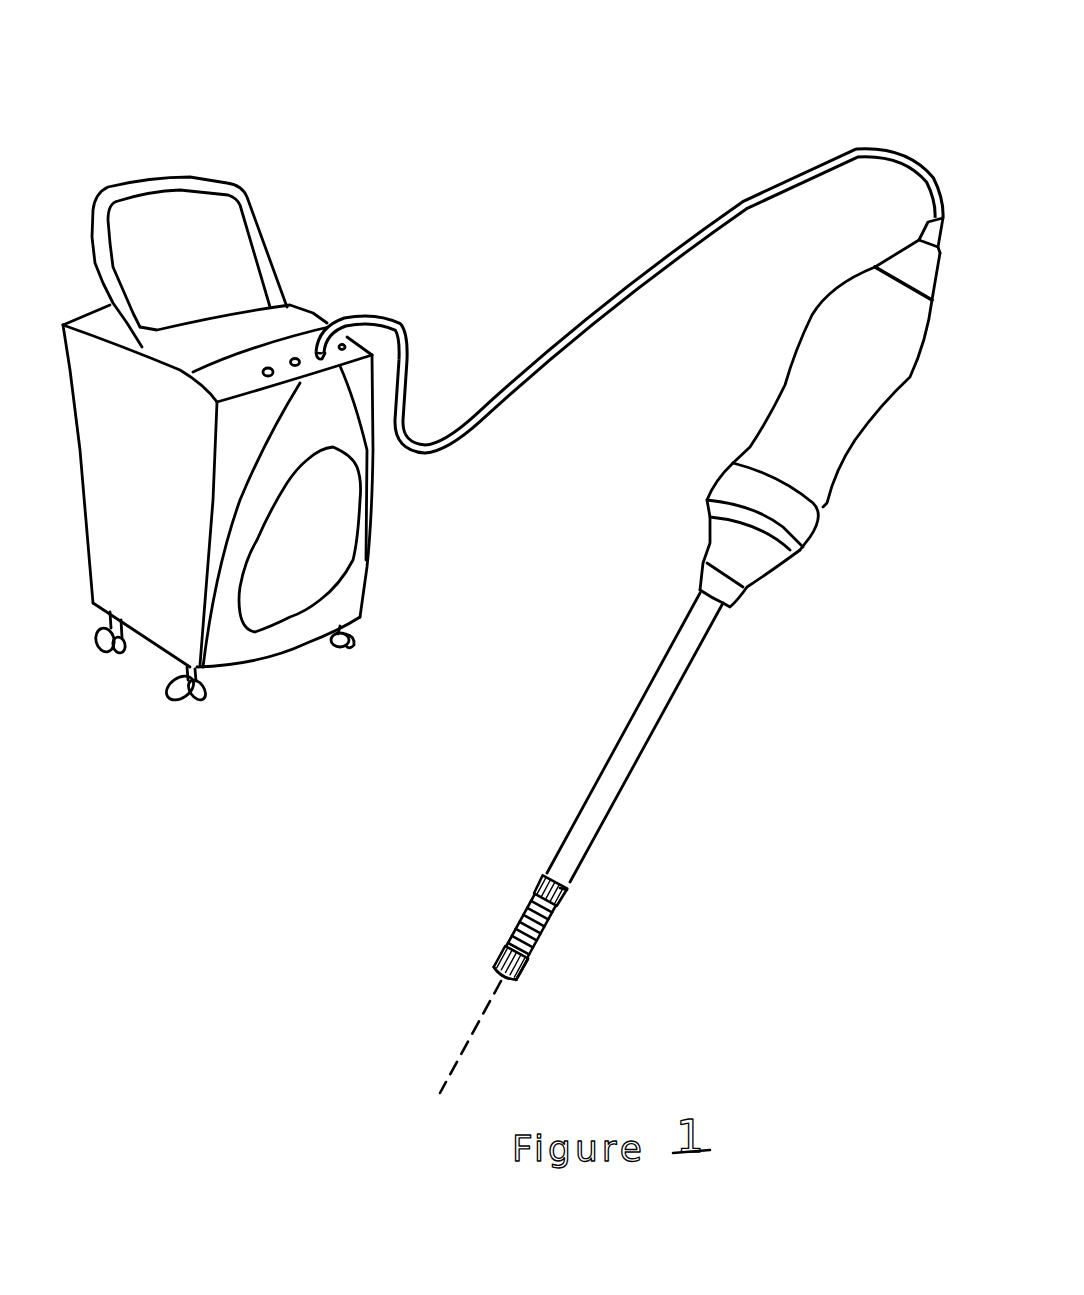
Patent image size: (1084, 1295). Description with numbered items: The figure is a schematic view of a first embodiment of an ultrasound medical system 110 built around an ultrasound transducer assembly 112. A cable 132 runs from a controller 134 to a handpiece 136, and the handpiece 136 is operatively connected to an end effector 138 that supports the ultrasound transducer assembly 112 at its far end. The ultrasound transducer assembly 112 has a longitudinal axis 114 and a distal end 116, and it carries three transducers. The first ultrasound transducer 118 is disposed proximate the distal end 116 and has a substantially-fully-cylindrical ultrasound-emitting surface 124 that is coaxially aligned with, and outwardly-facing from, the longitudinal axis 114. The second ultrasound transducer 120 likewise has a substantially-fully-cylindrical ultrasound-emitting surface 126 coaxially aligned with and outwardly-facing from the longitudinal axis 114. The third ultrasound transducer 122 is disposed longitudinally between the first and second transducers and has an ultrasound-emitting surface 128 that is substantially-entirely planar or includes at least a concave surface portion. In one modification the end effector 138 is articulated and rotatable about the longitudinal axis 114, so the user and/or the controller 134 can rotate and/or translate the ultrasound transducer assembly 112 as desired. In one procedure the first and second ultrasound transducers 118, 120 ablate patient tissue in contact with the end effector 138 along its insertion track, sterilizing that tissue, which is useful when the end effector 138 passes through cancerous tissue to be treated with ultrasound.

The ultrasound medical system 110 is at (530, 50).
The ultrasound transducer assembly 112 is at (490, 910).
The longitudinal axis 114 is at (450, 1077).
The distal end 116 is at (503, 985).
The first ultrasound transducer 118 is at (483, 971).
The second ultrasound transducer 120 is at (533, 883).
The third ultrasound transducer 122 is at (502, 936).
The ultrasound-emitting surface 124 is at (524, 970).
The ultrasound-emitting surface 126 is at (563, 893).
The ultrasound-emitting surface 128 is at (523, 905).
The cable 132 is at (677, 240).
The controller 134 is at (308, 258).
The handpiece 136 is at (790, 360).
The end effector 138 is at (645, 843).